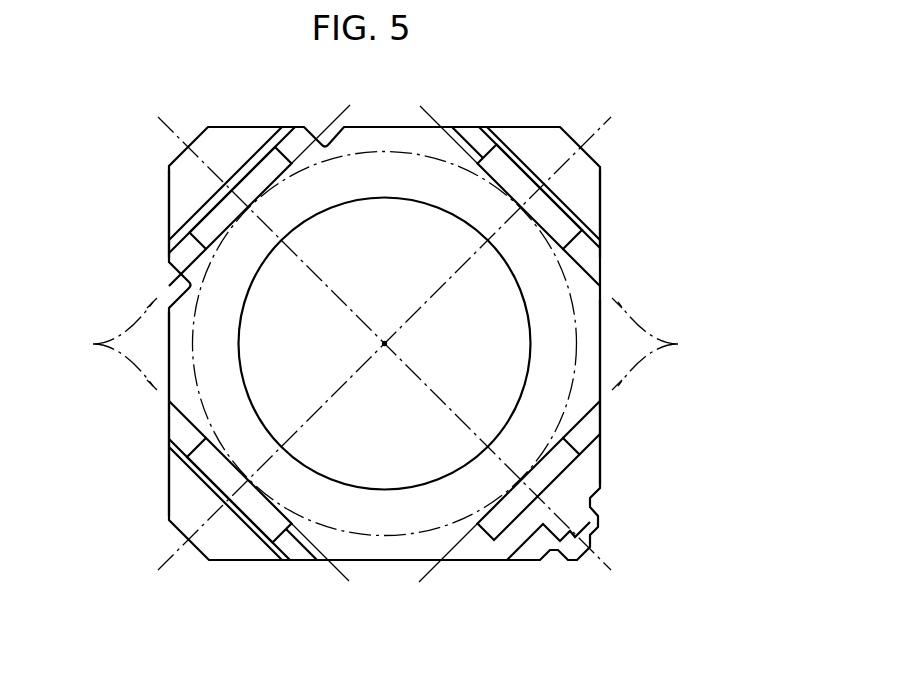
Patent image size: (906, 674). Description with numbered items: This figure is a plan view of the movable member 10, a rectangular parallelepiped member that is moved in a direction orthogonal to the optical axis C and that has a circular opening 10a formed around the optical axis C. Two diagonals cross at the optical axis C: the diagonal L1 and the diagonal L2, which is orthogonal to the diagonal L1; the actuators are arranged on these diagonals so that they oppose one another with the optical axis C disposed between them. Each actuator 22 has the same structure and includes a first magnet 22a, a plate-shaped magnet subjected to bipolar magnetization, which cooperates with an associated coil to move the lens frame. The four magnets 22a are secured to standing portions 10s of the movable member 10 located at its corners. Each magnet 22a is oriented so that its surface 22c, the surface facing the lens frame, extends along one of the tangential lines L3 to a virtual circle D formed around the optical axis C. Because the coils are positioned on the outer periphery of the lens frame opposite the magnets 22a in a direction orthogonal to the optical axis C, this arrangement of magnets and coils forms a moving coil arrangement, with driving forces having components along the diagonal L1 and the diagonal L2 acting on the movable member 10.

The movable member 10 is at (385, 127).
The circular opening 10a is at (243, 335).
The standing portions 10s is at (180, 193).
The actuator 22 is at (411, 343).
The first magnet 22a is at (195, 240).
The surfaces of the magnets 22c is at (297, 166).
The optical axis C is at (384, 341).
The virtual circle D is at (386, 538).
The diagonal L1 is at (184, 131).
The diagonal L2 is at (584, 130).
The tangential lines L3 is at (385, 344).